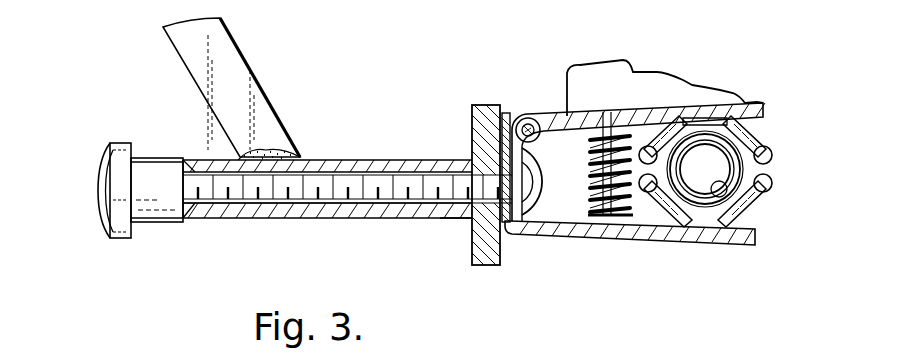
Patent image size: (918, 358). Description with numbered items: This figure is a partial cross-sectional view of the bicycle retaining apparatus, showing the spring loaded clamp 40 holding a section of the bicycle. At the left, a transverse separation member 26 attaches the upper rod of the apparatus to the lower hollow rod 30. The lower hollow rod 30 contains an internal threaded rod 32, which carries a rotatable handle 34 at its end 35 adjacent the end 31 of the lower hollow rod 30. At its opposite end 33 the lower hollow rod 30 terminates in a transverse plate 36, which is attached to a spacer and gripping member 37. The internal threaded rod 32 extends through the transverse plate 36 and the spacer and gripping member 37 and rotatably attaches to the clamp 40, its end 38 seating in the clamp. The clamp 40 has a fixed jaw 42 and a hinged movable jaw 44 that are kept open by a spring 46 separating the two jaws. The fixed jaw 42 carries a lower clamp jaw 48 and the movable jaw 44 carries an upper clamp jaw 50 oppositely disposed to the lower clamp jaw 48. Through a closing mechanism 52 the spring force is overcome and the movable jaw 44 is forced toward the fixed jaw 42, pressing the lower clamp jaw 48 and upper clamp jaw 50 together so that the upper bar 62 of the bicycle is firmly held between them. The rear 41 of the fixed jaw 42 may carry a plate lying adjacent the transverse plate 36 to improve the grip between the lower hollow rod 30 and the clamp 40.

The transverse separation member 26 is at (258, 82).
The lower hollow rod 30 is at (365, 160).
The end of lower hollow rod 31 is at (190, 158).
The internal threaded rod 32 is at (324, 196).
The opposite end of lower hollow rod 33 is at (468, 219).
The handle 34 is at (104, 222).
The end of internal threaded rod 35 is at (183, 215).
The transverse plate 36 is at (483, 110).
The spacer and gripping member 37 is at (507, 116).
The ball end 38 is at (521, 193).
The clamp 40 is at (624, 248).
The rear of fixed jaw 41 is at (540, 182).
The fixed jaw 42 is at (645, 242).
The hinged movable jaw 44 is at (763, 103).
The spring 46 is at (590, 195).
The lower clamp jaw 48 is at (745, 207).
The upper clamp jaw 50 is at (752, 150).
The closing mechanism 52 is at (665, 87).
The upper bar 62 is at (714, 195).